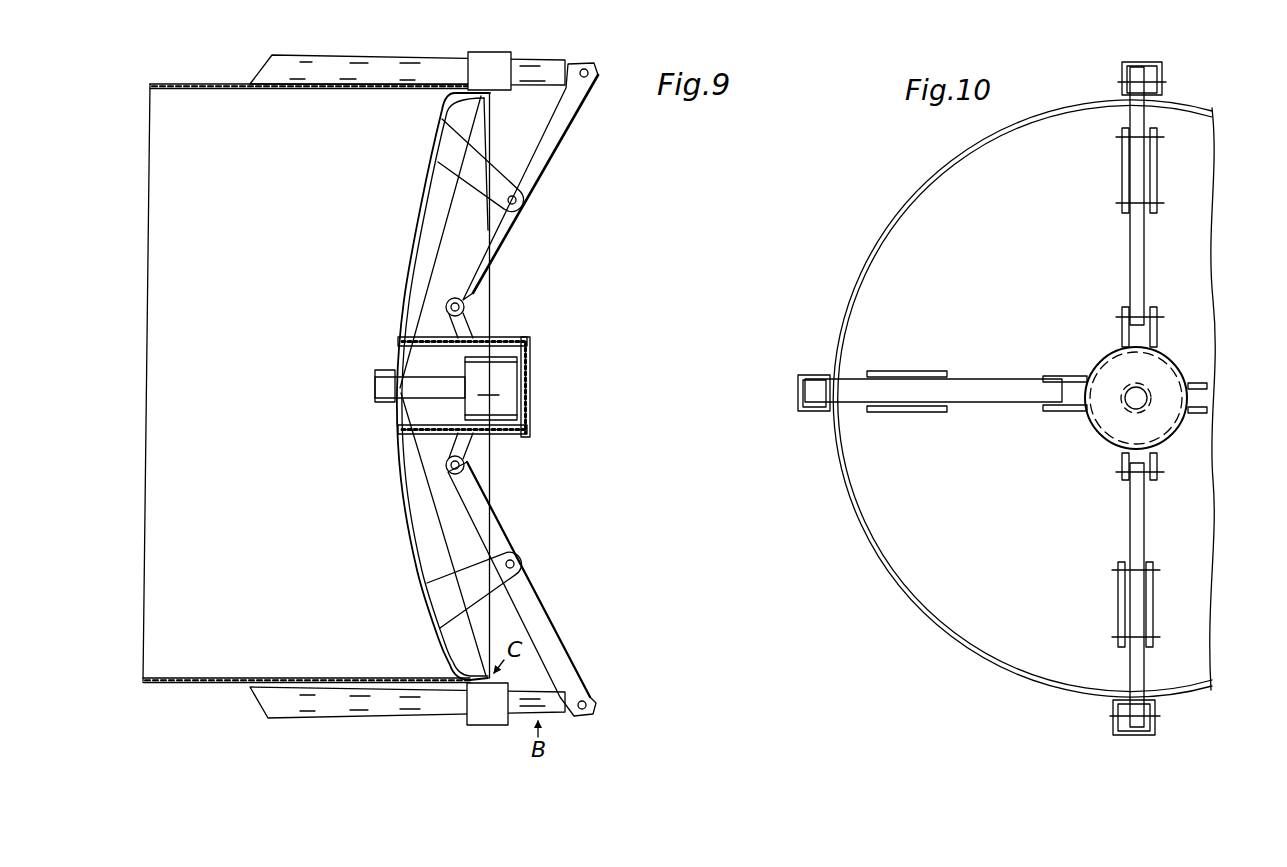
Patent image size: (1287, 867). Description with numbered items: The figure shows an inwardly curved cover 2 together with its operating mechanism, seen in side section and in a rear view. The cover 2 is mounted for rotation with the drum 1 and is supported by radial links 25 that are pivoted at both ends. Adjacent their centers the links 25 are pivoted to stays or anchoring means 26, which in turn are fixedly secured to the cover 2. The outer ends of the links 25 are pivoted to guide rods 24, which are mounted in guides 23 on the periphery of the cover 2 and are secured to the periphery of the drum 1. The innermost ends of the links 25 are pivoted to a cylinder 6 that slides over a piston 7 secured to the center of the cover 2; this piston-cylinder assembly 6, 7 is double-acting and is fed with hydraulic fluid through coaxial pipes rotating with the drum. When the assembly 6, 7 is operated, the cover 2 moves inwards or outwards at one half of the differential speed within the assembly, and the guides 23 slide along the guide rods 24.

The drum 1 is at (299, 597).
The inwardly curved cover 2 is at (421, 550).
The cylinder 6 is at (505, 438).
The piston 7 is at (503, 340).
The guides 23 is at (488, 726).
The guide rods 24 is at (560, 714).
The radial links 25 is at (547, 613).
The stays or anchoring means 26 is at (521, 572).